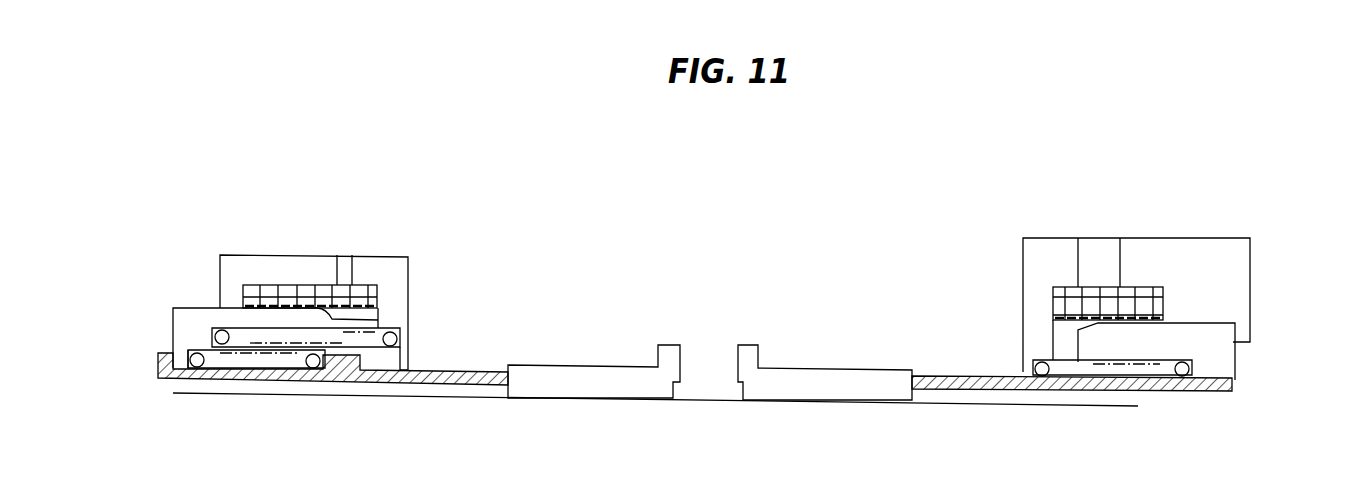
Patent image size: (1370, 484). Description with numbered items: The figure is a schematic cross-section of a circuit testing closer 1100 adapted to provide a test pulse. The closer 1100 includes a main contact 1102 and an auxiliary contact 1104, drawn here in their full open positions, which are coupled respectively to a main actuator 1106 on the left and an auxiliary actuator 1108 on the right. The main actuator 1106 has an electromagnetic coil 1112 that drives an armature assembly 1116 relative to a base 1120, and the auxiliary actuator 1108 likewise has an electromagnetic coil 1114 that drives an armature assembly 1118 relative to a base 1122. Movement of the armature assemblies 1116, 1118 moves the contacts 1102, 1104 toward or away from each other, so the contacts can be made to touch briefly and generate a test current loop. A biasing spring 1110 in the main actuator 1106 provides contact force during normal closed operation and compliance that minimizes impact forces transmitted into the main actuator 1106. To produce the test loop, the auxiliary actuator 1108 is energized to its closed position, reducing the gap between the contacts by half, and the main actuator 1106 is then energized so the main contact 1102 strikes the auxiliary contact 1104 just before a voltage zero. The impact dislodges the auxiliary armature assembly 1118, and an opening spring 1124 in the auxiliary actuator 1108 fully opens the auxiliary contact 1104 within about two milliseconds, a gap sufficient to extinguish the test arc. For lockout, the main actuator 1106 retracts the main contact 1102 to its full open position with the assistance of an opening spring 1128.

The circuit testing closer 1100 is at (889, 208).
The main contact 1102 is at (671, 348).
The auxiliary contact 1104 is at (752, 350).
The main actuator 1106 is at (353, 230).
The auxiliary actuator 1108 is at (1211, 221).
The biasing spring 1110 is at (215, 362).
The electromagnetic coil 1112 is at (363, 298).
The electromagnetic coil 1114 is at (1142, 305).
The armature assembly 1116 is at (190, 323).
The armature assembly 1118 is at (1202, 352).
The base 1120 is at (367, 258).
The base 1122 is at (1152, 258).
The opening spring 1124 is at (1158, 368).
The opening spring 1128 is at (370, 338).